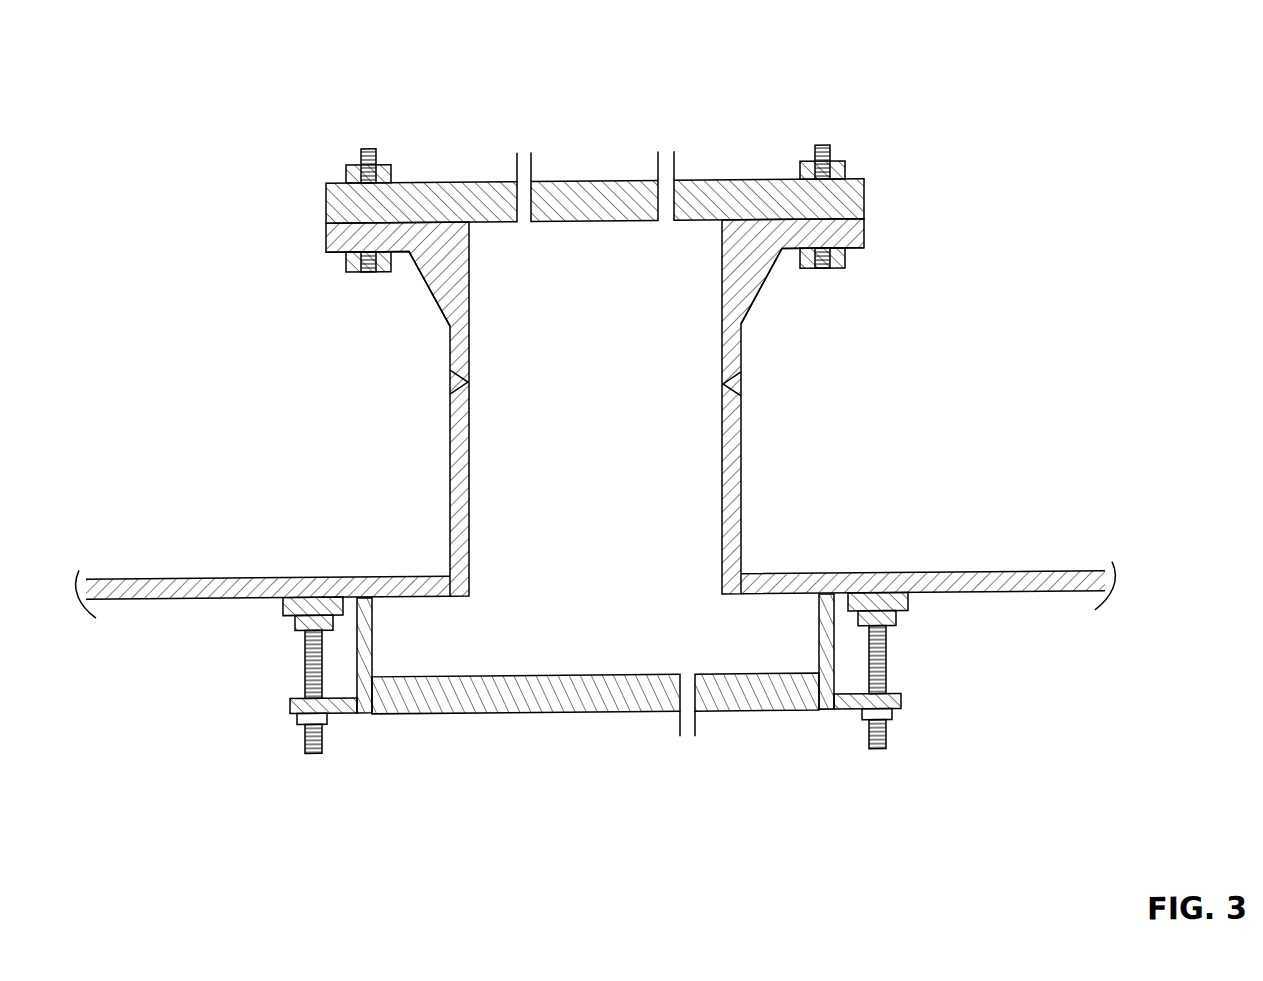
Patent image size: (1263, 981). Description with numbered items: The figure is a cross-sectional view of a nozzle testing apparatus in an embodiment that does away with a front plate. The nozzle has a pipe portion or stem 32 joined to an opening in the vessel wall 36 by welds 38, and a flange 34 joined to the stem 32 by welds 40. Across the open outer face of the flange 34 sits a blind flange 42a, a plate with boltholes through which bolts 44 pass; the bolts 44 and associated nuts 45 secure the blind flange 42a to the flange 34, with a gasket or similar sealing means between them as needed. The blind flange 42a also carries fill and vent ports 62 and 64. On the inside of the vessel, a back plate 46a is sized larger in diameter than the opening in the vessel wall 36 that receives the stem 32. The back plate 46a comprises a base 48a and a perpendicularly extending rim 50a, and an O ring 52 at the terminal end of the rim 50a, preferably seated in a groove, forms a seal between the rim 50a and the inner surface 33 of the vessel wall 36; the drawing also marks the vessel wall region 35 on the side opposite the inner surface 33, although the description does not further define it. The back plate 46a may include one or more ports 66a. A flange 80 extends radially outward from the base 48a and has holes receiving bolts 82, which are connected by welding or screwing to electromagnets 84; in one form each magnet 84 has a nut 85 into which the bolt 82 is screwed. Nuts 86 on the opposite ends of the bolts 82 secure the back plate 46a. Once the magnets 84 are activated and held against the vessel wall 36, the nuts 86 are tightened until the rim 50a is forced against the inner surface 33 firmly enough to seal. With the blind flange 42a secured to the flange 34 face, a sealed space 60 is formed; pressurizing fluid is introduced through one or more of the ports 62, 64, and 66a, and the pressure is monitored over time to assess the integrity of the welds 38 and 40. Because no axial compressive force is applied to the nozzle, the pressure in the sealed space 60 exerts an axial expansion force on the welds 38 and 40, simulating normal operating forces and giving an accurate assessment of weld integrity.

The stem 32 is at (742, 462).
The inner surface of the vessel wall 33 is at (1026, 610).
The flange 34 is at (432, 298).
The upper side arrow 35 is at (957, 566).
The vessel wall 36 is at (157, 574).
The welds 38 is at (453, 590).
The welds 40 is at (450, 381).
The blind flange 42a is at (437, 180).
The bolts 44 is at (372, 146).
The nuts 45 is at (345, 169).
The back plate 46a is at (802, 737).
The base 48a is at (520, 675).
The rim 50a is at (373, 661).
The O ring 52 is at (368, 598).
The sealed space 60 is at (610, 441).
The fill port 62 is at (518, 151).
The vent port 64 is at (674, 152).
The port 66a is at (690, 750).
The flange 80 is at (343, 716).
The bolts 82 is at (322, 724).
The electromagnets 84 is at (290, 604).
The nut 85 is at (298, 627).
The nuts 86 is at (292, 718).